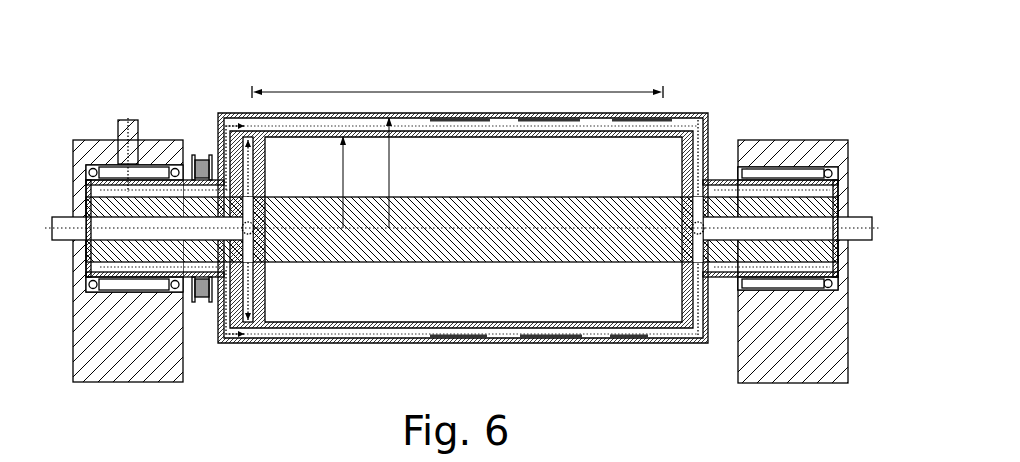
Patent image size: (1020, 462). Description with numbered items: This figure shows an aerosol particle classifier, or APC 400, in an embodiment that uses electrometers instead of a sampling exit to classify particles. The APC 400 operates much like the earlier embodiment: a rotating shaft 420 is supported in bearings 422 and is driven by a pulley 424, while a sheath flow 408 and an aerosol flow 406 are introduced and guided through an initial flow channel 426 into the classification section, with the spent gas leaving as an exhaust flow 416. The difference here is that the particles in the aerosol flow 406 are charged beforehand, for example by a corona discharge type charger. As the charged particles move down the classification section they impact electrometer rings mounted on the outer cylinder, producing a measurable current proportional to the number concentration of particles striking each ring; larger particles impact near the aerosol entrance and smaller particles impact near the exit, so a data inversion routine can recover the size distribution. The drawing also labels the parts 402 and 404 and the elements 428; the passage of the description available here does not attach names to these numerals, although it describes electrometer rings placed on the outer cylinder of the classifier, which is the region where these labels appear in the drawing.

The APC 400 is at (468, 216).
The inner drum 402 is at (505, 138).
The outer shell 404 is at (586, 113).
The aerosol flow 406 is at (50, 237).
The sheath flow 408 is at (128, 110).
The exhaust flow 416 is at (880, 228).
The rotating shaft 420 is at (440, 265).
The bearings 422 is at (175, 290).
The pulley 424 is at (205, 303).
The initial flow channel 426 is at (218, 143).
The heater strips 428 is at (452, 340).